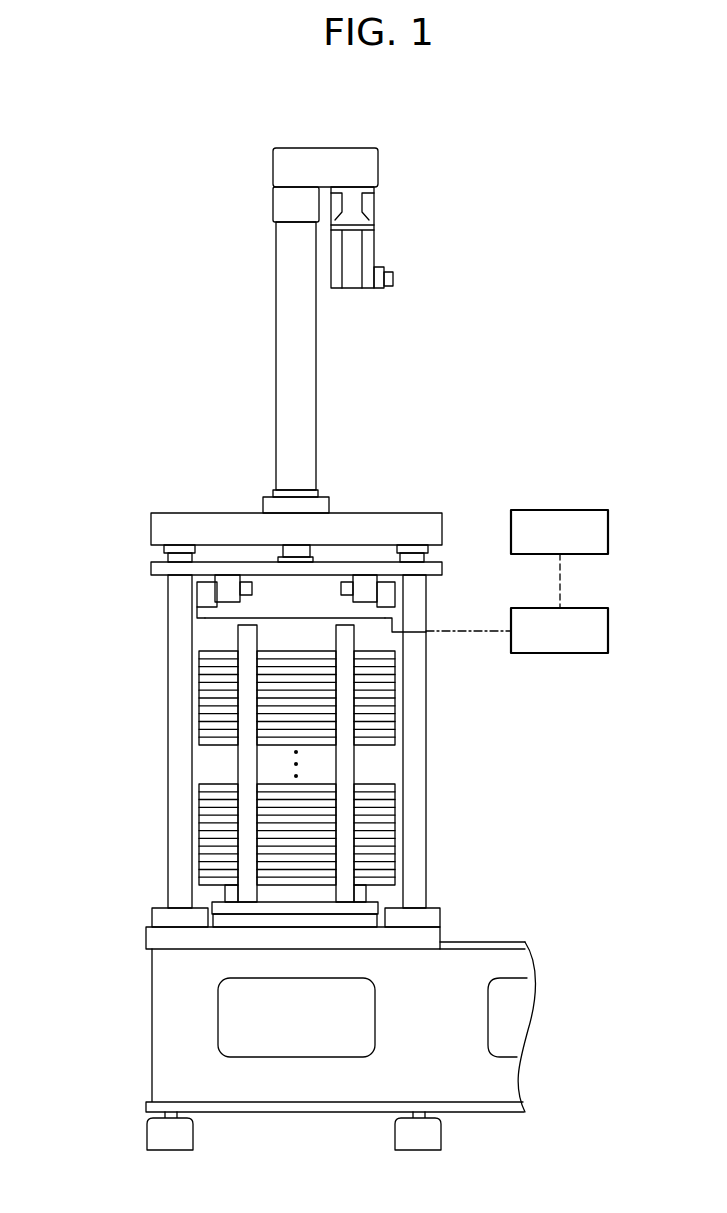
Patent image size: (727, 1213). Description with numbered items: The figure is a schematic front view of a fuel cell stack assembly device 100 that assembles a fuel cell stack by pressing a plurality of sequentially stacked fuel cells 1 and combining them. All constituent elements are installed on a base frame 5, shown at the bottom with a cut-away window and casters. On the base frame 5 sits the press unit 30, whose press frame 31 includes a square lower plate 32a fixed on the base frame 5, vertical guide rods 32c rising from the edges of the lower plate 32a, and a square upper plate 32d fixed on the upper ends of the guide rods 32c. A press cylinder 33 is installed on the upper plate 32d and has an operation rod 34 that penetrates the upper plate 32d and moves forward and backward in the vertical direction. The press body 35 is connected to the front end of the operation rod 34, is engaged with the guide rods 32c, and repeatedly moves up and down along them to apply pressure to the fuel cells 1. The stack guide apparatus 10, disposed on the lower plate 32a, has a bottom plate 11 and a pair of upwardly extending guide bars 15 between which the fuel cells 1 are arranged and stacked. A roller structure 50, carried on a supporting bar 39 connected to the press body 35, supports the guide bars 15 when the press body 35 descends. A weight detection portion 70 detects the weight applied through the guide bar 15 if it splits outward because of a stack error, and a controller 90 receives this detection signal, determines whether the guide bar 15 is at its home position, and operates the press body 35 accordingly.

The fuel cell stack assembly device 100 is at (370, 108).
The fuel cell 1 is at (187, 657).
The base frame 5 is at (165, 1017).
The stack guide apparatus 10 is at (210, 892).
The bottom plate 11 is at (365, 888).
The guide bar 15 is at (243, 766).
The press unit 30 is at (257, 475).
The press frame 31 is at (132, 528).
The lower plate 32a is at (153, 938).
The guide rod 32c is at (177, 826).
The upper plate 32d is at (415, 525).
The press cylinder 33 is at (285, 261).
The operation rod 34 is at (290, 553).
The press body 35 is at (285, 636).
The supporting bar 39 is at (365, 583).
The roller structure 50 is at (219, 616).
The weight detection portion 70 is at (608, 629).
The controller 90 is at (608, 531).